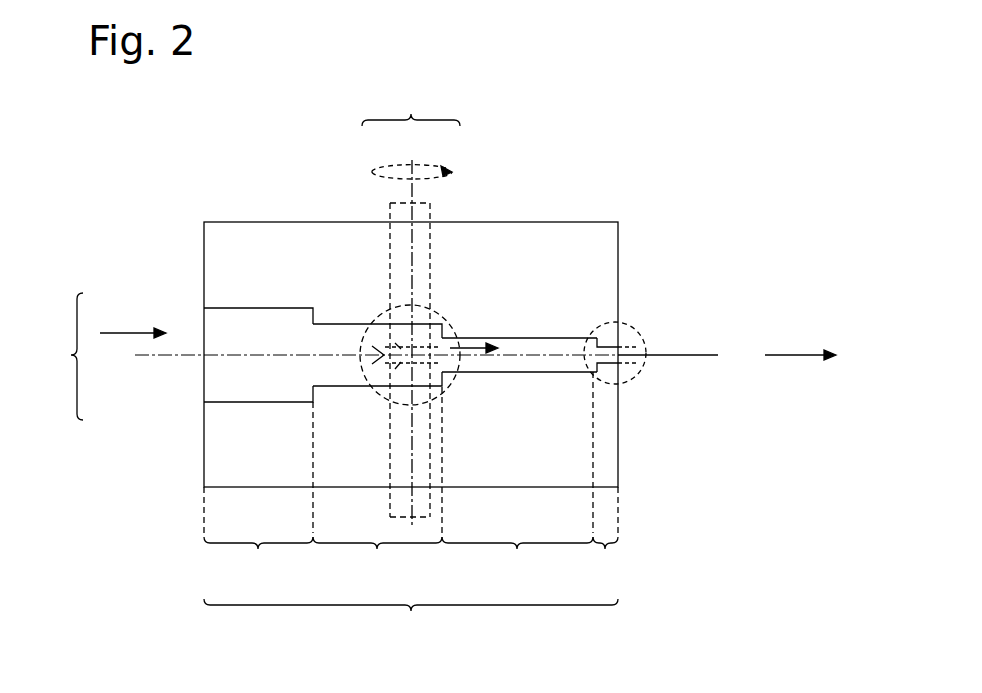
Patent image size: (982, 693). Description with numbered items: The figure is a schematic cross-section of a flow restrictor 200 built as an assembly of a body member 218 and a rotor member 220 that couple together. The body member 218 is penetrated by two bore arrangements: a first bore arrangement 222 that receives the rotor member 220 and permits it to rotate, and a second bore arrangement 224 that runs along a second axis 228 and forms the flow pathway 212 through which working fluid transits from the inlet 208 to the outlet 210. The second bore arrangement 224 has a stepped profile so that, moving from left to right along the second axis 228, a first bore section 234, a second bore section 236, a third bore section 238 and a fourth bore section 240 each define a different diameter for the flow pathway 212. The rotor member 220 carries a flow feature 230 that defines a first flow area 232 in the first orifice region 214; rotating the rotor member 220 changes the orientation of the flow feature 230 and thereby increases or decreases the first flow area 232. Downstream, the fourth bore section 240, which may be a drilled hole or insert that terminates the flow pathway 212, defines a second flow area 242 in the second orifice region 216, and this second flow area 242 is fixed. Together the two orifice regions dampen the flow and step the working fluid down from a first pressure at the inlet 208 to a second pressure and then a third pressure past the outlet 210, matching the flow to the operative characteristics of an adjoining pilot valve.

The flow restrictor 200 is at (685, 116).
The inlet 208 is at (186, 284).
The outlet 210 is at (684, 294).
The flow pathway 212 is at (411, 623).
The first orifice region 214 is at (377, 318).
The second orifice region 216 is at (632, 324).
The body member 218 is at (590, 222).
The rotor member 220 is at (435, 202).
The first bore arrangement 222 is at (411, 106).
The second bore arrangement 224 is at (55, 356).
The second axis 228 is at (700, 355).
The flow feature 230 is at (396, 396).
The first flow area 232 is at (372, 352).
The first bore section 234 is at (258, 534).
The second bore section 236 is at (377, 484).
The third bore section 238 is at (517, 476).
The fourth bore section 240 is at (608, 534).
The second flow area 242 is at (612, 357).